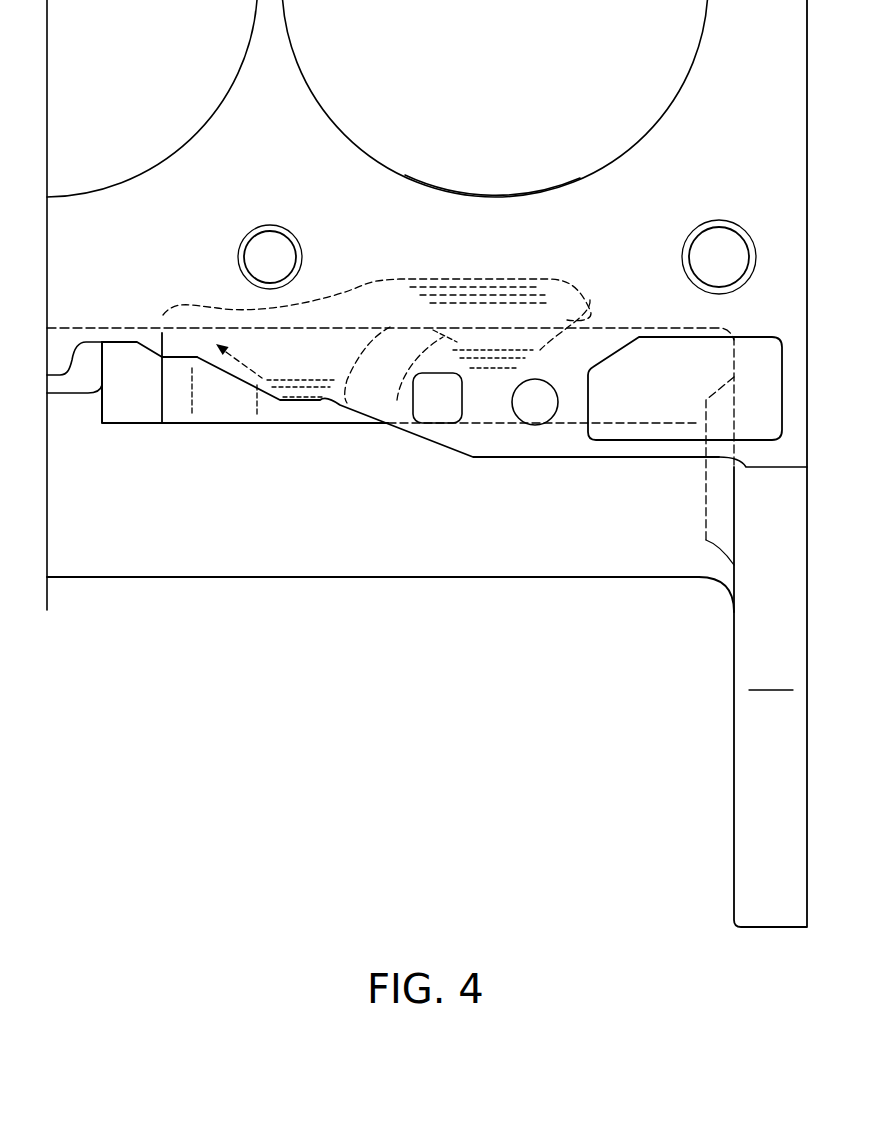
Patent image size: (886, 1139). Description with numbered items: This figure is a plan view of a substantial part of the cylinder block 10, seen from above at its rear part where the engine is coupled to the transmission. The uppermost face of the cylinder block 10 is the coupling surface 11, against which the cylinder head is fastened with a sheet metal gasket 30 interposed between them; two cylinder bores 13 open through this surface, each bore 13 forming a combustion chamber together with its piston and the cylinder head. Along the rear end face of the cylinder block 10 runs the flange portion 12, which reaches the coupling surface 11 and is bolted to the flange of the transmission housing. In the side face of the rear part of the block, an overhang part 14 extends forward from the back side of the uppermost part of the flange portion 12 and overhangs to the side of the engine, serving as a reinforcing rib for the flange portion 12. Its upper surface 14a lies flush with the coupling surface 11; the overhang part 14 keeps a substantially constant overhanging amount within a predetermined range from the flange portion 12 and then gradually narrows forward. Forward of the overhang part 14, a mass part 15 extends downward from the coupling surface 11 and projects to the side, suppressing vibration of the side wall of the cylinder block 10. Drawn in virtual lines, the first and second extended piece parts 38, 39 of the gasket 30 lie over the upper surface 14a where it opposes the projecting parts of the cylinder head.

The cylinder block 10 is at (268, 590).
The coupling surface 11 is at (285, 130).
The flange portion 12 is at (752, 641).
The cylinder bore 13 is at (405, 175).
The overhang part 14 is at (597, 478).
The upper surface of the overhang part 14a is at (485, 410).
The mass part 15 is at (60, 368).
The sheet metal gasket 30 is at (212, 365).
The first extended piece part 38 is at (440, 337).
The second extended piece part 39 is at (337, 413).